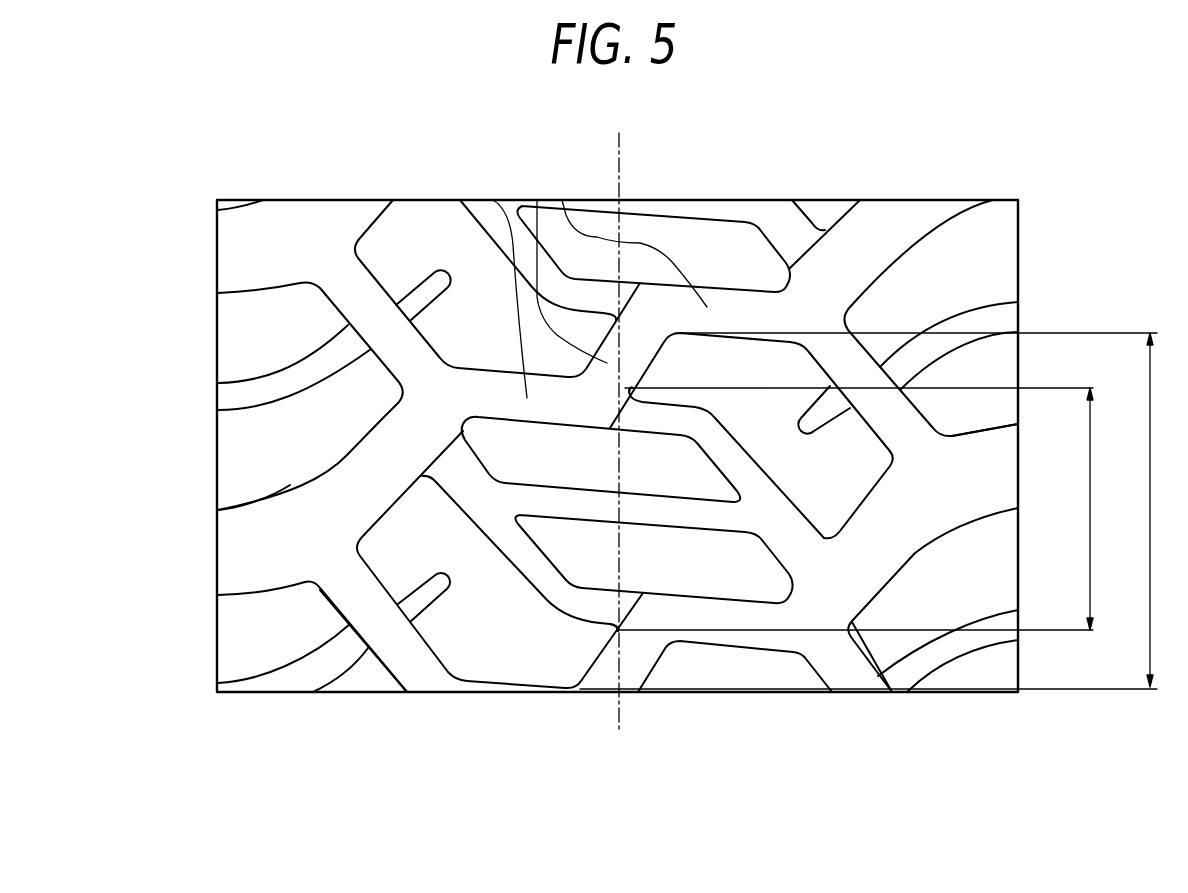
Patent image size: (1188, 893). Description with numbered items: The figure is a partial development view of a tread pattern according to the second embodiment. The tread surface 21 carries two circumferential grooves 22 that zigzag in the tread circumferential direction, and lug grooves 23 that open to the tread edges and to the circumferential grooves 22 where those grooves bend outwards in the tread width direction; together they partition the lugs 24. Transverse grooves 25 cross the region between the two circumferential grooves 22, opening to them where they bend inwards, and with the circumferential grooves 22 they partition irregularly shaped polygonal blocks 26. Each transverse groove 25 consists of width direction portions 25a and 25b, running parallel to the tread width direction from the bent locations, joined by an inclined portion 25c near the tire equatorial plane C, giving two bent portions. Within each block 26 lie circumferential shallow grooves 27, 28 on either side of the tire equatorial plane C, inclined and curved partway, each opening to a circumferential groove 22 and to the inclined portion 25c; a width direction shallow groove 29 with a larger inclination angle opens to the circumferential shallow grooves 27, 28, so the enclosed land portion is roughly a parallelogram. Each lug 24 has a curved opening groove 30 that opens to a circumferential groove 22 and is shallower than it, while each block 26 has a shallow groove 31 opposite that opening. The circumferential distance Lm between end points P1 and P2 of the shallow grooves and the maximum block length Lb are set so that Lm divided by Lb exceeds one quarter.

The tread surface 21 is at (877, 170).
The circumferential grooves 22 is at (407, 653).
The lug grooves 23 is at (233, 553).
The lugs 24 is at (252, 345).
The transverse grooves 25 is at (580, 136).
The width direction portion 25a is at (562, 200).
The width direction portion 25b is at (493, 200).
The inclined portion 25c is at (537, 217).
The blocks 26 is at (469, 345).
The circumferential shallow groove 27 is at (500, 240).
The circumferential shallow groove 28 is at (785, 232).
The width direction shallow groove 29 is at (693, 522).
The opening groove 30 is at (233, 398).
The shallow groove 31 is at (428, 284).
The tire equatorial plane C is at (619, 417).
The circumferential end point P1 is at (634, 388).
The circumferential end point P2 is at (613, 627).
The circumferential distance Lm is at (873, 509).
The maximum length of the block Lb is at (883, 511).